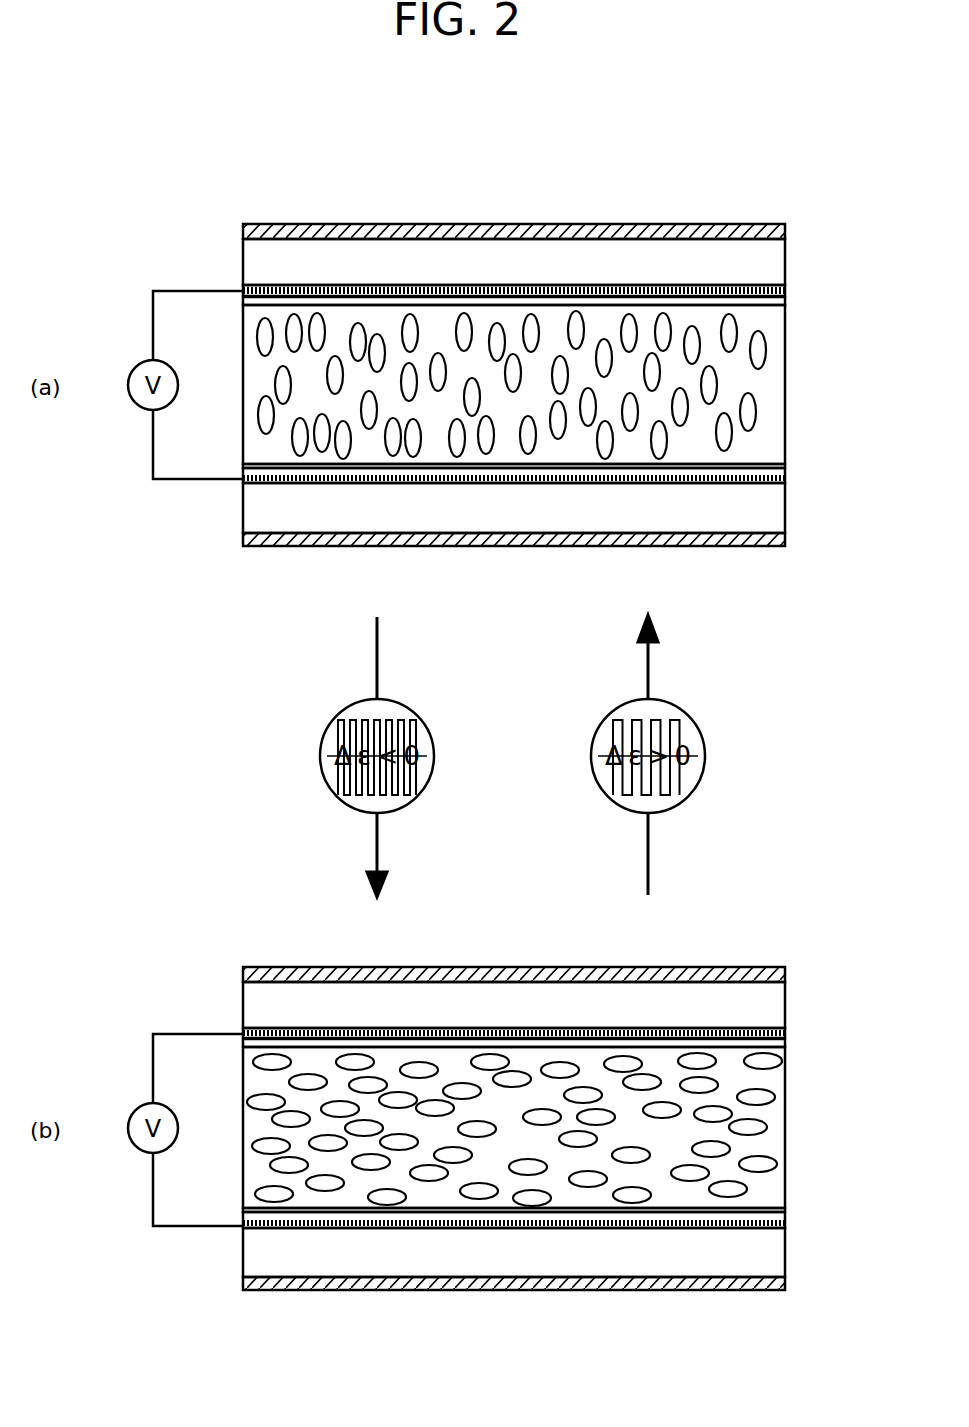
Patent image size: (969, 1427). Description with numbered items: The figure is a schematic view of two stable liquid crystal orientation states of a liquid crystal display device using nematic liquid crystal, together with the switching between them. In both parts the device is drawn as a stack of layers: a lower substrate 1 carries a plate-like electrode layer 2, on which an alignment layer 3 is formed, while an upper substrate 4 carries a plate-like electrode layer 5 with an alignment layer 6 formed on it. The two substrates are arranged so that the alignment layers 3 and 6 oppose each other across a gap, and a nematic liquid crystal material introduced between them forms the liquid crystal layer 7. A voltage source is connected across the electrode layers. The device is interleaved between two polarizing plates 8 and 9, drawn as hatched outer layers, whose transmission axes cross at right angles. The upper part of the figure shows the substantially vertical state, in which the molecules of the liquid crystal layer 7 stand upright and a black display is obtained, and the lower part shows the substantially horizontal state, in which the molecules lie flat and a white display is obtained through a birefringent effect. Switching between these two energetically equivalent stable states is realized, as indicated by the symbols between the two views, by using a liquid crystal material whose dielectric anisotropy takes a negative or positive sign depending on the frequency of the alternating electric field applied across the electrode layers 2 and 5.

The substrate 1 is at (785, 508).
The plate-like electrode layer 2 is at (785, 478).
The alignment layer 3 is at (785, 468).
The substrate 4 is at (785, 262).
The plate-like electrode layer 5 is at (785, 291).
The alignment layer 6 is at (785, 301).
The liquid crystal layer 7 is at (785, 385).
The polarizing plate 8 is at (785, 540).
The polarizing plate 9 is at (785, 228).